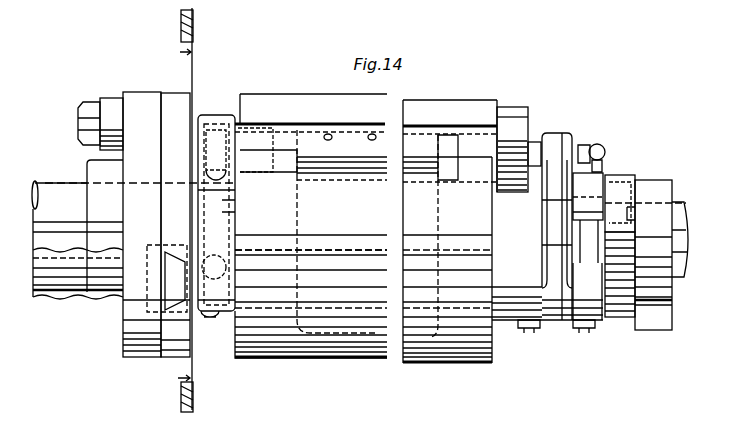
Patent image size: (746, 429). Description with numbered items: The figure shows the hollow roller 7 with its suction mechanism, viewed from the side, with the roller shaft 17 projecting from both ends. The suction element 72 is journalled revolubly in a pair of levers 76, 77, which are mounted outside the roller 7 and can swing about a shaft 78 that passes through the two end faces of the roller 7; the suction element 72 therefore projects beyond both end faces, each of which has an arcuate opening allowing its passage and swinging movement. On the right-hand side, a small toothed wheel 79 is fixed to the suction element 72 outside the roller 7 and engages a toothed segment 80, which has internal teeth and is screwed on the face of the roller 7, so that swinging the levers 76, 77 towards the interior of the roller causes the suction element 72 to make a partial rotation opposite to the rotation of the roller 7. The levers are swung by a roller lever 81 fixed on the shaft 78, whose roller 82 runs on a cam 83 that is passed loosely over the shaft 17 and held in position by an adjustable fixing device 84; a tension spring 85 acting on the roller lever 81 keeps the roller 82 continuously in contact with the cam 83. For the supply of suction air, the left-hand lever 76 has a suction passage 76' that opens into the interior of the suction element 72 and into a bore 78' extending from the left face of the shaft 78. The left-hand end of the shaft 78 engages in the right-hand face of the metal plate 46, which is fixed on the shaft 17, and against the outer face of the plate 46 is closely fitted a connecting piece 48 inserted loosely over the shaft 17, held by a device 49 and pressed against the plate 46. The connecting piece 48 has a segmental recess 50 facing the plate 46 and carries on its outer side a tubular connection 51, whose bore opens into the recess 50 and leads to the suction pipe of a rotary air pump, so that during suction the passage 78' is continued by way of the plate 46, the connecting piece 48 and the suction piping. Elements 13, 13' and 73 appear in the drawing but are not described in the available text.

The hollow roller 7 is at (333, 358).
The tube 13 is at (280, 121).
The tube bar 13' is at (366, 101).
The shaft of the roller 17 is at (47, 186).
The plate 46 is at (176, 93).
The connecting piece 48 is at (144, 92).
The device 49 is at (110, 101).
The recess 50 is at (147, 311).
The tubular connection 51 is at (47, 297).
The suction element 72 is at (353, 160).
The rivets 73 is at (332, 139).
The lever 76 is at (216, 190).
The suction passage 76' is at (248, 201).
The lever 77 is at (552, 134).
The shaft 78 is at (311, 240).
The bore 78' is at (206, 315).
The toothed wheel 79 is at (514, 193).
The toothed segment 80 is at (511, 118).
The roller lever 81 is at (595, 186).
The roller 82 is at (622, 182).
The cam 83 is at (618, 318).
The adjustable fixing device 84 is at (656, 326).
The tension spring 85 is at (598, 180).